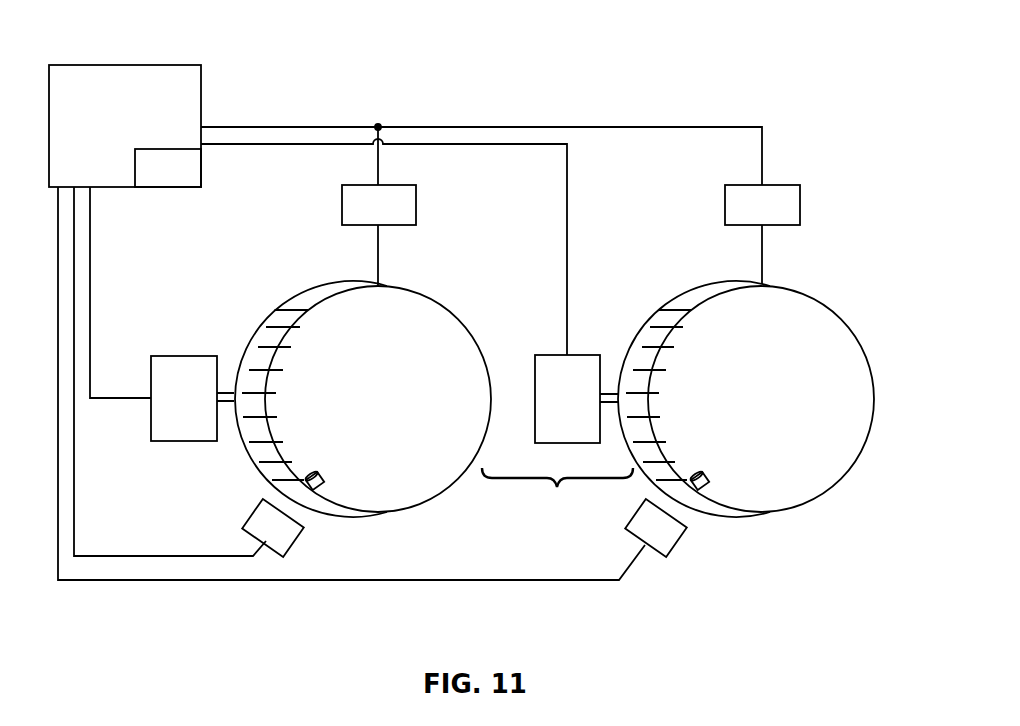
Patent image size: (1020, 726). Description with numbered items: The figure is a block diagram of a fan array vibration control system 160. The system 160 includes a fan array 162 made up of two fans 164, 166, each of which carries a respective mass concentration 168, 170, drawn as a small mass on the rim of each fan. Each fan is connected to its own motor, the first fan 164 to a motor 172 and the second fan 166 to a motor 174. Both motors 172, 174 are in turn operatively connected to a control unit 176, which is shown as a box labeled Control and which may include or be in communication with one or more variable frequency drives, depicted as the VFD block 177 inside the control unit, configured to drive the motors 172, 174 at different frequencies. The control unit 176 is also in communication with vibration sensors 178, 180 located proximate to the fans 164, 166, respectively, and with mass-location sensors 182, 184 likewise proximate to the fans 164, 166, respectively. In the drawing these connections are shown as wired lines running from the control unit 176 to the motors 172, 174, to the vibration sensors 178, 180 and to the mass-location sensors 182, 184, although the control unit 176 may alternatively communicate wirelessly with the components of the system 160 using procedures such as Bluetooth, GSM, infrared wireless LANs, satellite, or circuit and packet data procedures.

The fan array vibration control system 160 is at (785, 74).
The fan array 162 is at (557, 494).
The fan 164 is at (300, 305).
The fan 166 is at (808, 293).
The mass concentration 168 is at (321, 474).
The mass concentration 170 is at (706, 474).
The motor 172 is at (195, 356).
The motor 174 is at (553, 355).
The control unit 176 is at (173, 65).
The variable frequency drive 177 is at (163, 188).
The vibration sensor 178 is at (416, 206).
The vibration sensor 180 is at (800, 200).
The mass-location sensor 182 is at (300, 535).
The mass-location sensor 184 is at (684, 535).